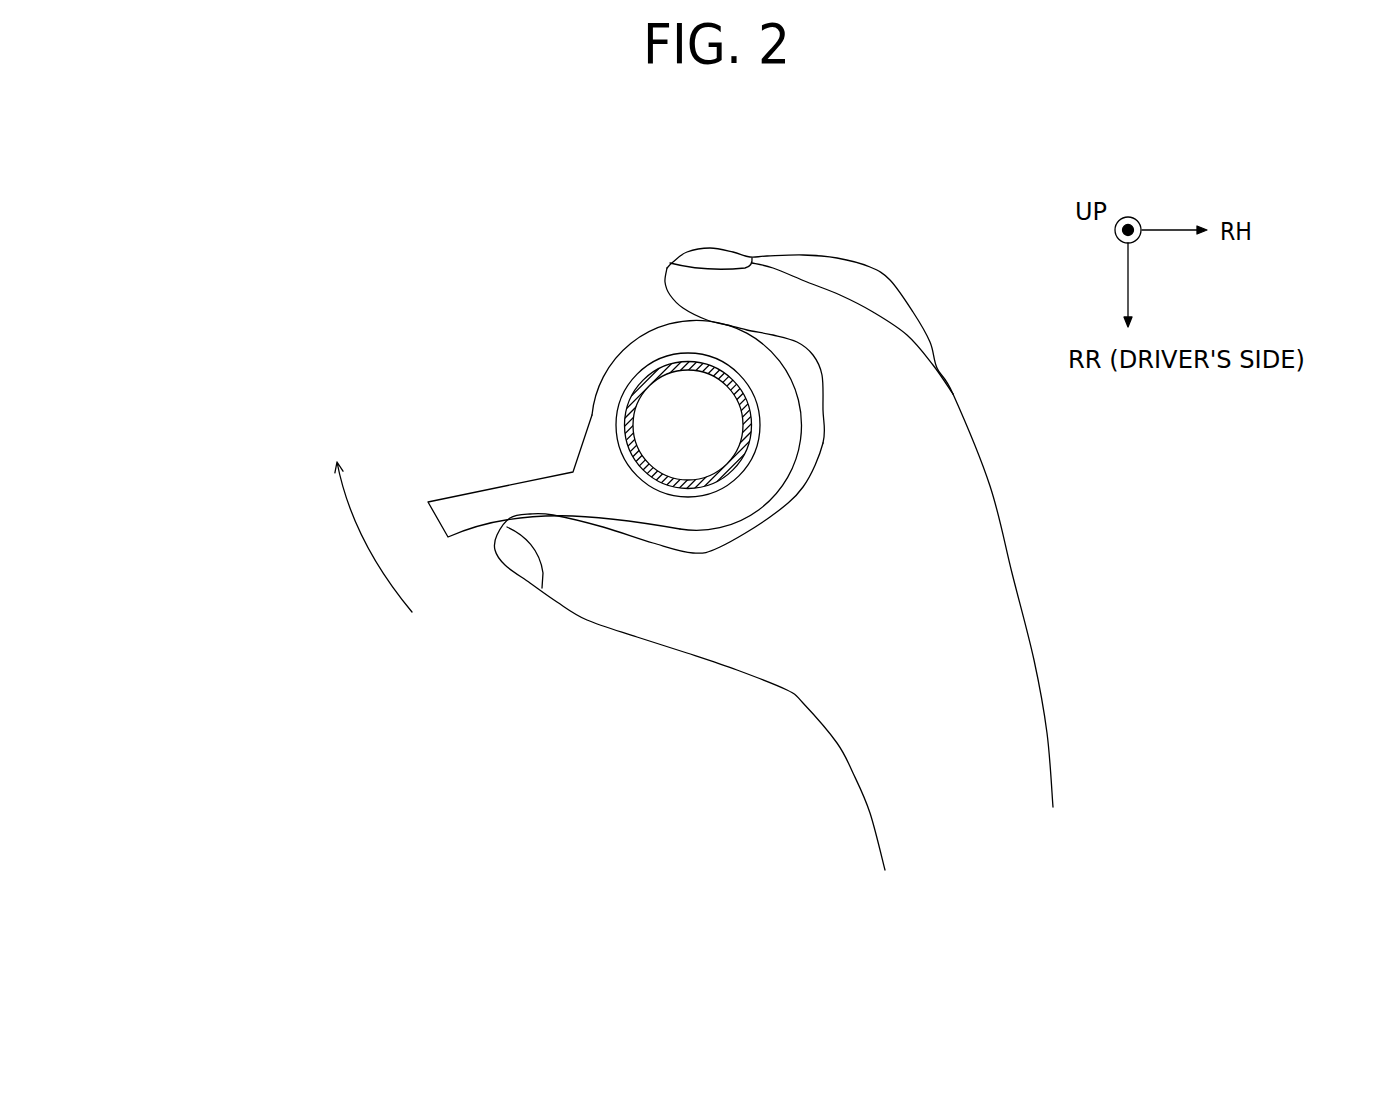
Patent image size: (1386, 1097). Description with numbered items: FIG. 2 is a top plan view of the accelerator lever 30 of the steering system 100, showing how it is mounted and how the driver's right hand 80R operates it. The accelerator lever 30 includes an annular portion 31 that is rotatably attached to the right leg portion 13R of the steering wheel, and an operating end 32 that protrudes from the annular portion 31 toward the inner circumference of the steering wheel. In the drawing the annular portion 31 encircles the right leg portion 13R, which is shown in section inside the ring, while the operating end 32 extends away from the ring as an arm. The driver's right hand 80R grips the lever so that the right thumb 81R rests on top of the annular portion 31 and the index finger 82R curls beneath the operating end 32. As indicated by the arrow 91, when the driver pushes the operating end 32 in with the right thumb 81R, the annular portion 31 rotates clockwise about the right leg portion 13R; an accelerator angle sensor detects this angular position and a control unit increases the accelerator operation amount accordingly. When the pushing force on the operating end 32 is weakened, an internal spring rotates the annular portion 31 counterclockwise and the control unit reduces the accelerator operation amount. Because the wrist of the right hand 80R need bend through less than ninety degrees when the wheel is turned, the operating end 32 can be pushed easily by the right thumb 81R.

The vehicle operating device 100 is at (227, 280).
The accelerator lever 30 is at (569, 408).
The annular portion 31 is at (643, 333).
The operating end 32 is at (473, 533).
The right leg portion 13R is at (635, 388).
The right hand 80R is at (1043, 734).
The right thumb 81R is at (582, 613).
The thumb of right hand 82R is at (743, 250).
The arrow 91 is at (357, 537).